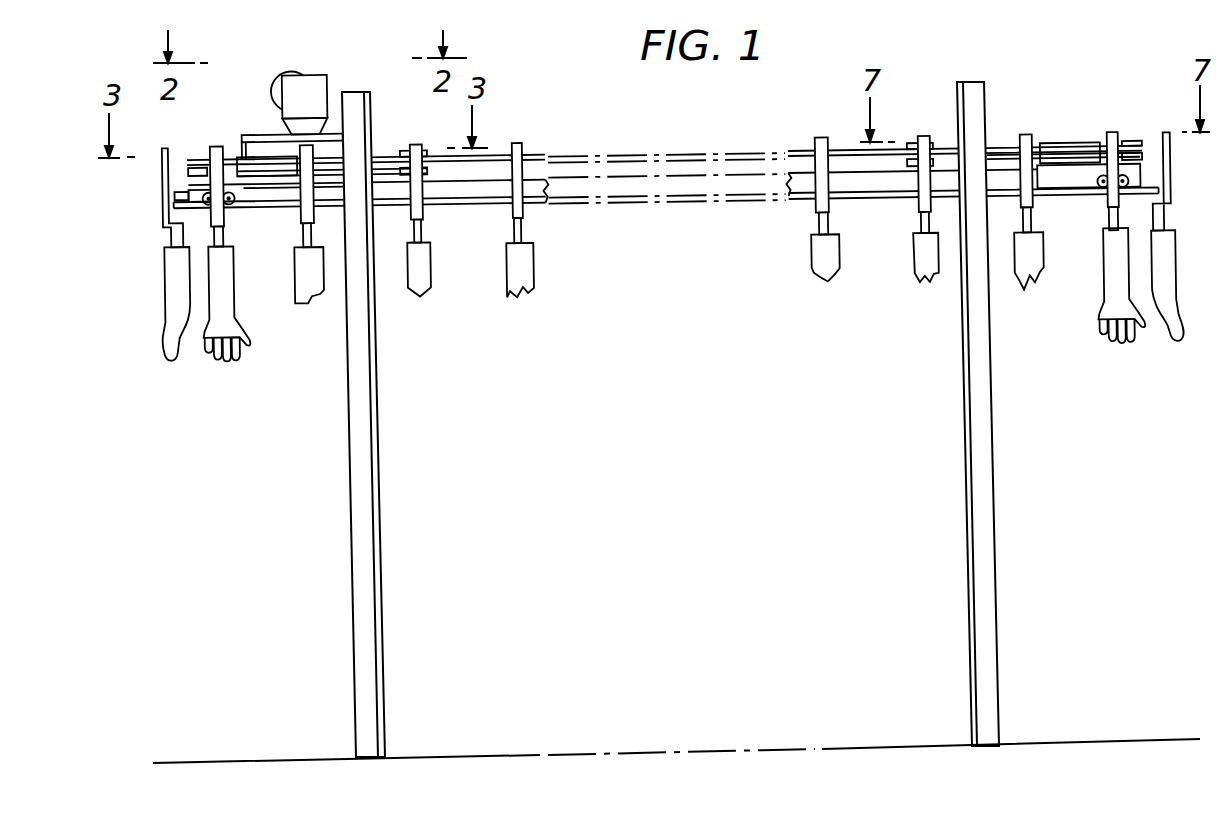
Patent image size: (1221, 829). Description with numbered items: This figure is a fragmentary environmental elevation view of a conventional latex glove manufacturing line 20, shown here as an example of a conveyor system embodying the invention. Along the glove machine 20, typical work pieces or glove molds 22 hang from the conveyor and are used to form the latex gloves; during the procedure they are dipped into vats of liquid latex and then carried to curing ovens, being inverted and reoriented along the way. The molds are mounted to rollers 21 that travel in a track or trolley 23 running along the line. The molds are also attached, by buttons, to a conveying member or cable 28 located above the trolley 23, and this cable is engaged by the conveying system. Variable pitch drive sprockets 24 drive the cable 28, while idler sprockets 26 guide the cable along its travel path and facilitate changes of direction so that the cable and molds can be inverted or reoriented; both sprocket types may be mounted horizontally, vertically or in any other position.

The manufacturing line 20 is at (688, 250).
The rollers 21 is at (232, 206).
The glove molds 22 is at (222, 323).
The track or trolley 23 is at (288, 210).
The drive sprockets 24 is at (232, 157).
The idler sprockets 26 is at (1088, 124).
The cable 28 is at (528, 162).